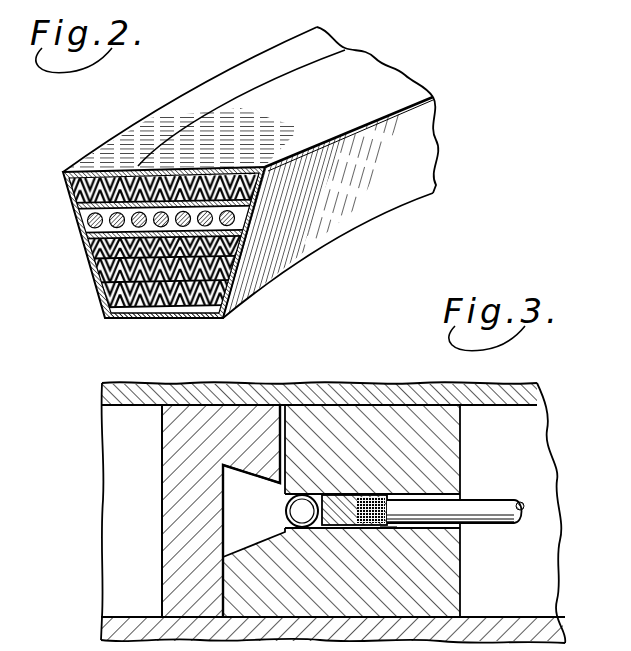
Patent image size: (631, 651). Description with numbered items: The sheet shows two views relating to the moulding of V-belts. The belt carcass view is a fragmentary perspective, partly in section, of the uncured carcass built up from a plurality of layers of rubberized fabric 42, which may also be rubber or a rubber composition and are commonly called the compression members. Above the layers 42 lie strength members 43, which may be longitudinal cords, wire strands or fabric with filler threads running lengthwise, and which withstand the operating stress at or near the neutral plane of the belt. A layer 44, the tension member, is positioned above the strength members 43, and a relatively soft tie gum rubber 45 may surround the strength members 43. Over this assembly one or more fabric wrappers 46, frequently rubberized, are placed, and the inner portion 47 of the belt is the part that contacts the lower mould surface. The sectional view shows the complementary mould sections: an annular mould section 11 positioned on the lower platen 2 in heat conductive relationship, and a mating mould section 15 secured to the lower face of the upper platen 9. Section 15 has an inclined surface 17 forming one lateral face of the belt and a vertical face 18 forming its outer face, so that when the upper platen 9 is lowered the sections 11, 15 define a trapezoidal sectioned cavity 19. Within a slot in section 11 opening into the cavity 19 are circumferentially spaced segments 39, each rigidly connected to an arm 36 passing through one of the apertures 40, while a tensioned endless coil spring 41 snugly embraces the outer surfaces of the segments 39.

In FIG. 3, the lower platen 2 is at (108, 627).
In FIG. 3, the upper platen 9 is at (365, 371).
In FIG. 3, the annular mould section 11 is at (438, 573).
In FIG. 3, the mould section 15 is at (178, 512).
In FIG. 3, the inclined surface 17 is at (230, 474).
In FIG. 3, the vertical face 18 is at (197, 545).
In FIG. 3, the trapezoidal sectioned cavity 19 is at (244, 483).
In FIG. 3, the arm 36 is at (507, 502).
In FIG. 3, the segment 39 is at (342, 497).
In FIG. 3, the aperture 40 is at (453, 487).
In FIG. 3, the endless coil spring 41 is at (286, 511).
In FIG. 2, the layers of rubberized fabric 42 is at (105, 293).
In FIG. 2, the strength members 43 is at (88, 226).
In FIG. 2, the layer 44 is at (117, 173).
In FIG. 2, the tie gum rubber 45 is at (90, 204).
In FIG. 2, the fabric wrapper 46 is at (383, 82).
In FIG. 2, the inner portion of the belt 47 is at (143, 316).